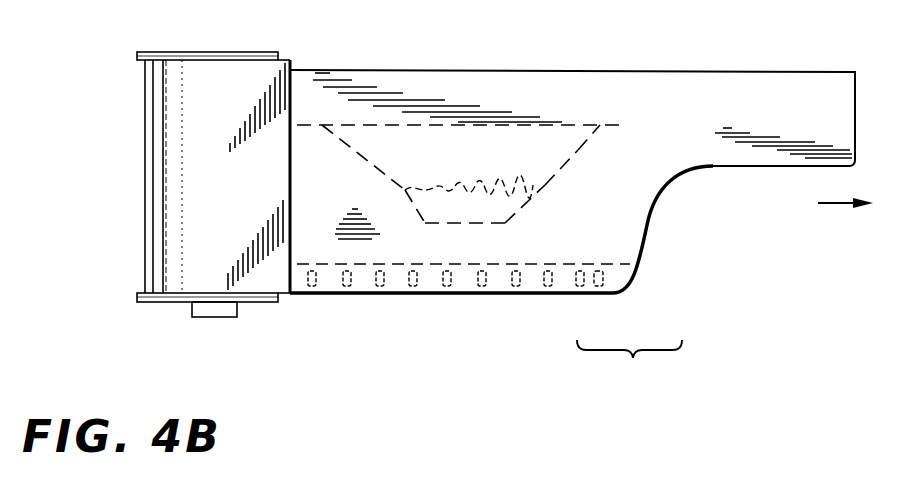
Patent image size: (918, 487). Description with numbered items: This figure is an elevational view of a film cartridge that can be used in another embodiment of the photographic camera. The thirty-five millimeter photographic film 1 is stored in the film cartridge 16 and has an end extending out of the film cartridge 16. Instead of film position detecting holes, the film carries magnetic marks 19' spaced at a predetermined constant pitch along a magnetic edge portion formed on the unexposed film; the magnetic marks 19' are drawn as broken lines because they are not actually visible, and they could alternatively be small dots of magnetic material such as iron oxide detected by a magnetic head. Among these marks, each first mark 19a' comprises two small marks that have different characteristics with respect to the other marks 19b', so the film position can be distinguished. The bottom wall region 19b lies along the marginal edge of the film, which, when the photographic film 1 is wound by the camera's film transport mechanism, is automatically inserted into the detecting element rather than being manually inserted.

The photographic film 1 is at (505, 78).
The film cartridge 16 is at (178, 286).
The bottom wall 19b is at (460, 312).
The other marks 19b' is at (446, 299).
The first mark 19a' is at (616, 300).
The magnetic marks 19' is at (629, 366).